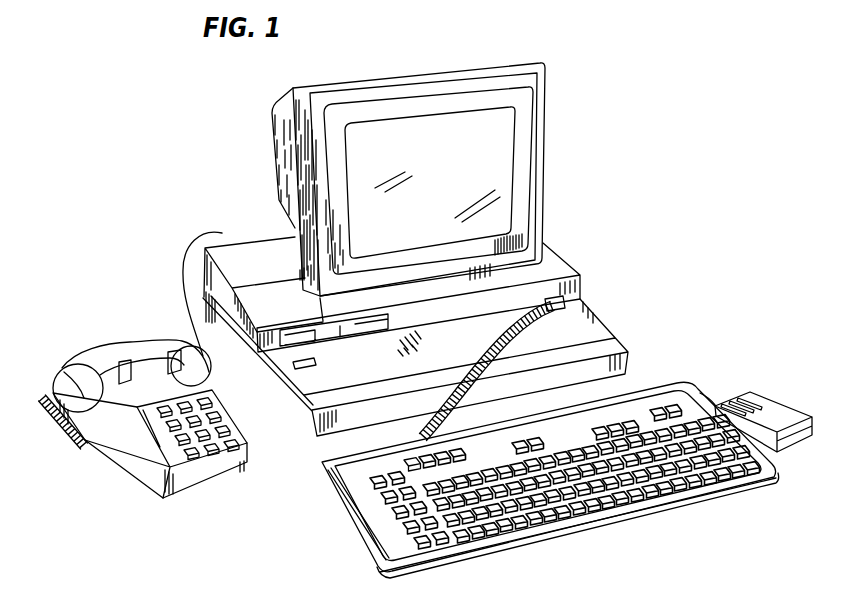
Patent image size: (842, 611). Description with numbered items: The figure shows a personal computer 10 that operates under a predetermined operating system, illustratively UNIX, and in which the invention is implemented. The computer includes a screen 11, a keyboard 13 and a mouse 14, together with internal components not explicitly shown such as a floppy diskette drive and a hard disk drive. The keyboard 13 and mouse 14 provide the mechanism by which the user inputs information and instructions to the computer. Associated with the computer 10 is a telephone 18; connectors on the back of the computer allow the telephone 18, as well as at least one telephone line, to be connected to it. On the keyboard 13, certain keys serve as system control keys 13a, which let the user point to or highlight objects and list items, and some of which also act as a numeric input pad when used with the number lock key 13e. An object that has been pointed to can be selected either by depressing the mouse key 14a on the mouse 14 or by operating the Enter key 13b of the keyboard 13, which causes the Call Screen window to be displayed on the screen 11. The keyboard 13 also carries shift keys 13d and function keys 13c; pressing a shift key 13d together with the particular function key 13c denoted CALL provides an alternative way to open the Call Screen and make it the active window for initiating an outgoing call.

The personal computer 10 is at (422, 51).
The screen 11 is at (500, 138).
The keyboard 13 is at (756, 477).
The system control keys 13a is at (656, 405).
The Enter key 13b is at (663, 467).
The function keys 13c is at (525, 433).
The shift keys 13d is at (641, 452).
The number lock key 13e is at (676, 462).
The mouse 14 is at (784, 411).
The mouse key 14a is at (750, 395).
The telephone 18 is at (203, 487).
The Call key CALL is at (440, 468).